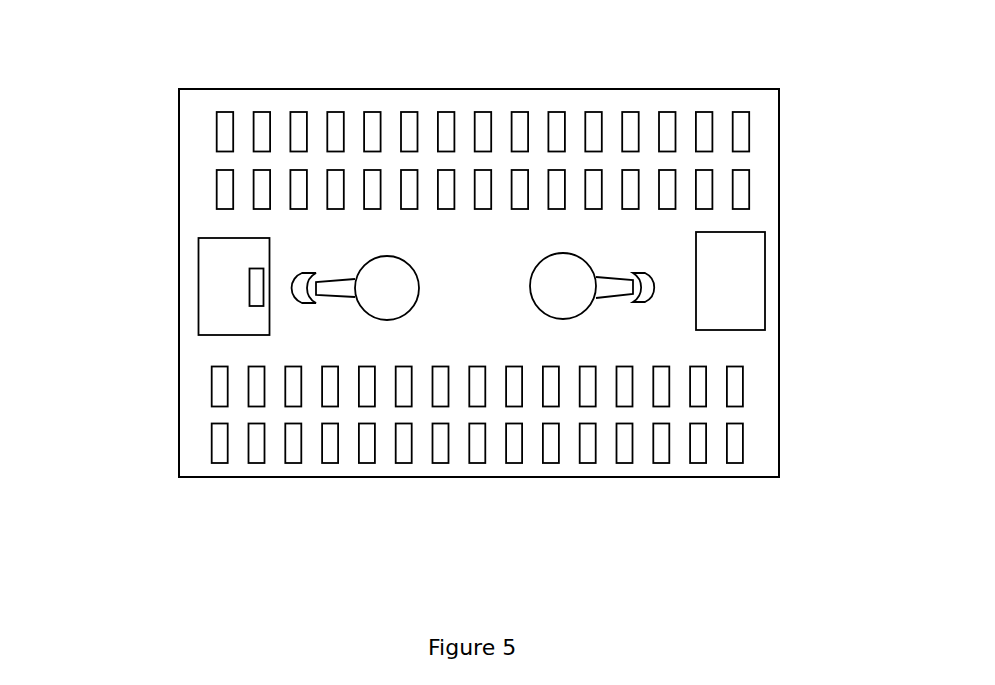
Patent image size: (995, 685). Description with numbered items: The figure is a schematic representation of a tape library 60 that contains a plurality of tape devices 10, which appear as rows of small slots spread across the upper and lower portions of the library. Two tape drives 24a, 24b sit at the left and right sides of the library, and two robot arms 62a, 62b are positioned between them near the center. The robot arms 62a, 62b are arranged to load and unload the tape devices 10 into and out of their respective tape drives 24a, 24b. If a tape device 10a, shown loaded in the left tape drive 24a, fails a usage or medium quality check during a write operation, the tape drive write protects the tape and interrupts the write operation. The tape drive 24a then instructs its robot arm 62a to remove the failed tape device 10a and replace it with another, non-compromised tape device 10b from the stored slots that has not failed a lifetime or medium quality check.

The tape device 10 is at (431, 438).
The failed tape device 10a is at (255, 288).
The non-compromised tape device 10b is at (297, 193).
The tape drive 24a is at (214, 277).
The tape drive 24b is at (752, 275).
The tape library 60 is at (451, 319).
The robot arm 62a is at (380, 308).
The robot arm 62b is at (555, 266).